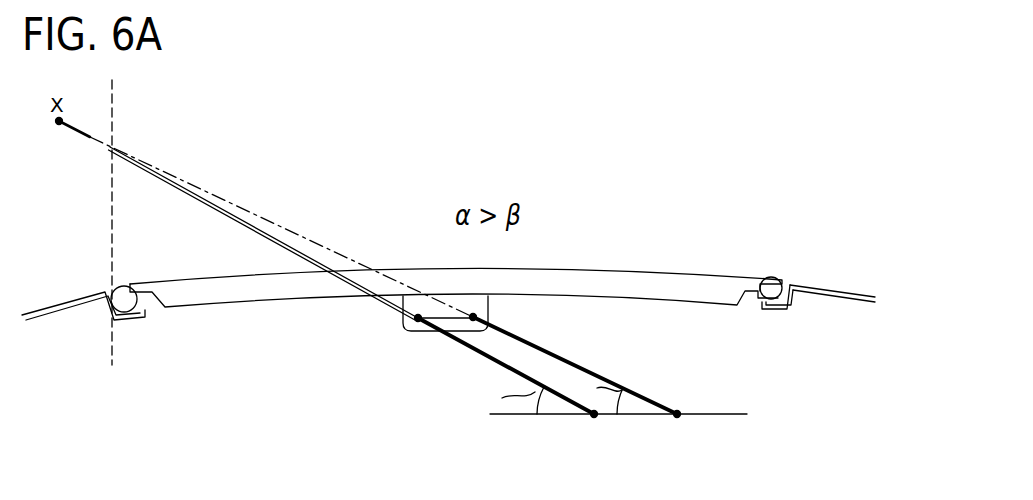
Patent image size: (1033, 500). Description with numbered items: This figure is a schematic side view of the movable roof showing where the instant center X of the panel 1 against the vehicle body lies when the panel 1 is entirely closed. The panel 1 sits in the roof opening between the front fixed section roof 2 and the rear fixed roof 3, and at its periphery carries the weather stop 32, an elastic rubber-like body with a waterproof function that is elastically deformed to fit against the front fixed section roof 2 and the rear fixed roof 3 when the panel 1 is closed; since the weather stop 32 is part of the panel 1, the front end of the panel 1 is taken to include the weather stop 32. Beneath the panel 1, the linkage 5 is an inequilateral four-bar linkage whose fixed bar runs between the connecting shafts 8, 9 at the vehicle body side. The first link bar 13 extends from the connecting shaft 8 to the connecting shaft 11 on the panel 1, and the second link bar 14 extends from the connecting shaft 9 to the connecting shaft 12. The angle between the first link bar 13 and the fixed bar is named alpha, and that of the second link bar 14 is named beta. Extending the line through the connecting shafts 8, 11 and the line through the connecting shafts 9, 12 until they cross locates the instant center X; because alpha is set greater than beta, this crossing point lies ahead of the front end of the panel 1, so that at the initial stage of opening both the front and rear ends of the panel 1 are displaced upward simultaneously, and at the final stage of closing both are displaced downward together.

The panel 1 is at (112, 97).
The front fixed section roof 2 is at (47, 308).
The rear fixed roof 3 is at (820, 288).
The linkage 5 is at (465, 400).
The connecting shaft 8 is at (594, 414).
The connecting shaft 9 is at (677, 414).
The connecting shaft 11 is at (407, 326).
The connecting shaft 12 is at (488, 307).
The first link bar 13 is at (480, 354).
The second link bar 14 is at (557, 352).
The weather stop 32 is at (123, 288).